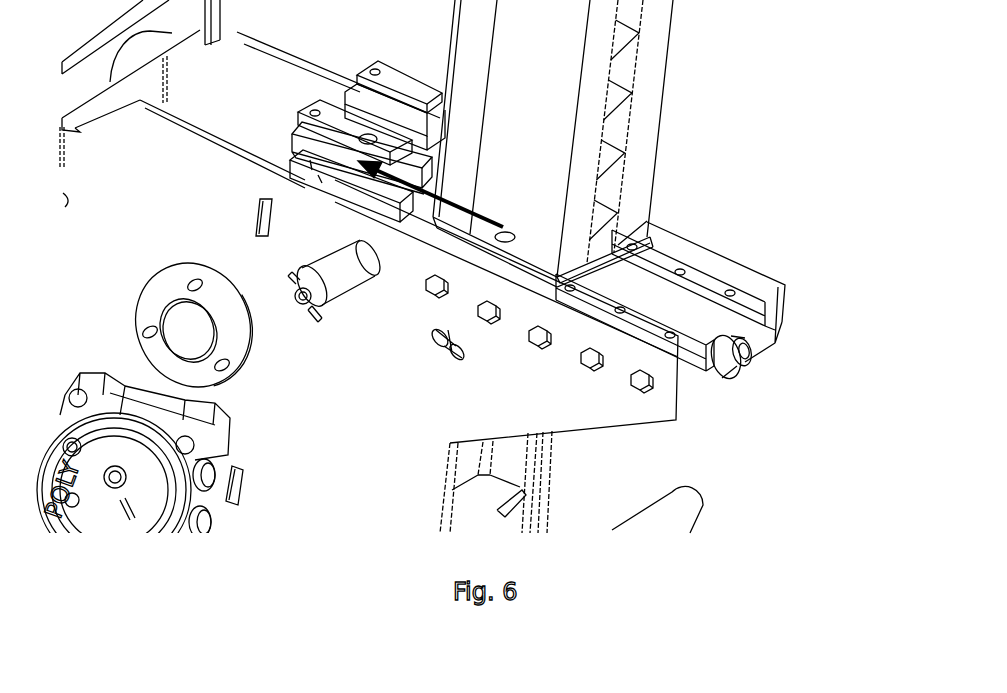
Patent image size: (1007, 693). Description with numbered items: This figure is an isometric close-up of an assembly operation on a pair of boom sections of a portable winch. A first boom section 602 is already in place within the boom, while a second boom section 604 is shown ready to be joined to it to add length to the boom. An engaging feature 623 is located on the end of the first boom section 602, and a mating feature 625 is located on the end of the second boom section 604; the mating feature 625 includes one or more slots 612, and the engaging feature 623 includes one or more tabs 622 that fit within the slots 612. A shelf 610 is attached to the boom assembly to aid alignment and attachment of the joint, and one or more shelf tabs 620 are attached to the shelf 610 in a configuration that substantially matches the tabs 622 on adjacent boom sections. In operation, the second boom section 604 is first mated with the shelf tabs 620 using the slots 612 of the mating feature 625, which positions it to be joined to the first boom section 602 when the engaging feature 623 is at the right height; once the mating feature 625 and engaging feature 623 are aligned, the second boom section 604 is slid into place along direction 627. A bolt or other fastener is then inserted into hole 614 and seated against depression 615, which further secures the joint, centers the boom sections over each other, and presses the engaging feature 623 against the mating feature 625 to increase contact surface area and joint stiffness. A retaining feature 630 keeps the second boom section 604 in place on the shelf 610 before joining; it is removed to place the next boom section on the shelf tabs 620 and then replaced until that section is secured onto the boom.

The first boom section 602 is at (390, 195).
The second boom section 604 is at (540, 85).
The shelf 610 is at (698, 322).
The slots 612 is at (570, 275).
The hole 614 is at (500, 240).
The depression 615 is at (368, 141).
The shelf tabs 620 is at (690, 352).
The tabs 622 is at (405, 152).
The engaging feature 623 is at (333, 114).
The mating feature 625 is at (523, 267).
The direction 627 is at (449, 222).
The retaining feature 630 is at (740, 363).